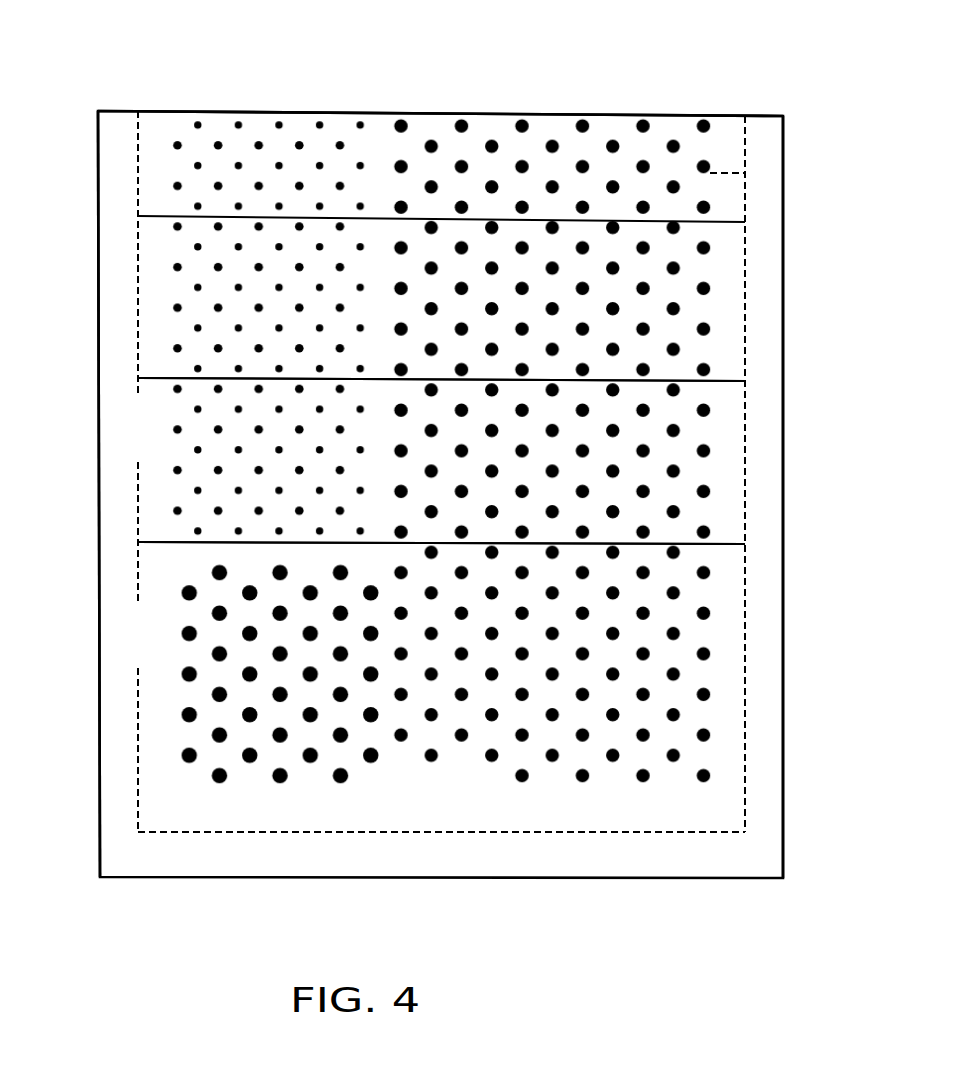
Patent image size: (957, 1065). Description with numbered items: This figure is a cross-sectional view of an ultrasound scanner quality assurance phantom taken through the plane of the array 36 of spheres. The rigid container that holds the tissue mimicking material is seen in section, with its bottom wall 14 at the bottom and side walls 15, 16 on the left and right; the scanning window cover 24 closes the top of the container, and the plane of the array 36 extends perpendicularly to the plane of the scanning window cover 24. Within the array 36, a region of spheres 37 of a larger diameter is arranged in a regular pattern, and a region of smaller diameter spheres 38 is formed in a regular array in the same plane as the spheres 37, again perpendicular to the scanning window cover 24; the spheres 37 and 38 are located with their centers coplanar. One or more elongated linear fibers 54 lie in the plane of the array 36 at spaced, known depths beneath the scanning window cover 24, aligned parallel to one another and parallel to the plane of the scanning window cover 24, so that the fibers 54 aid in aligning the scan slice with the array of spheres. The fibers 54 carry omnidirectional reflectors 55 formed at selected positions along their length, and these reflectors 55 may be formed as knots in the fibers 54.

The bottom wall 14 is at (688, 880).
The side wall 15 is at (100, 612).
The side wall 16 is at (785, 693).
The scanning window cover 24 is at (383, 112).
The array of spheres 36 is at (673, 128).
The larger diameter spheres 37 is at (643, 130).
The smaller diameter spheres 38 is at (298, 147).
The elongated linear fibers 54 is at (730, 543).
The omnidirectional reflectors 55 is at (300, 367).